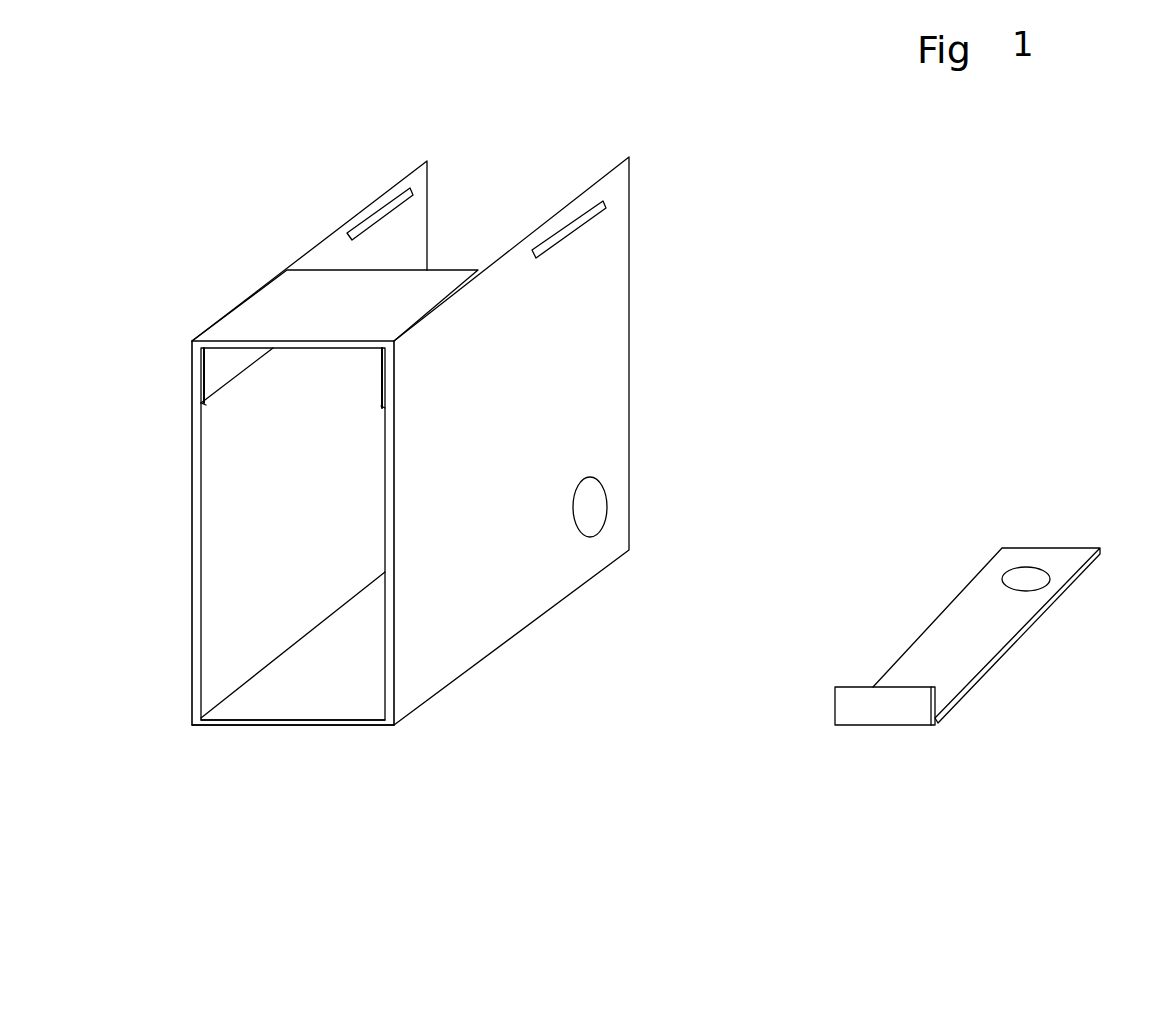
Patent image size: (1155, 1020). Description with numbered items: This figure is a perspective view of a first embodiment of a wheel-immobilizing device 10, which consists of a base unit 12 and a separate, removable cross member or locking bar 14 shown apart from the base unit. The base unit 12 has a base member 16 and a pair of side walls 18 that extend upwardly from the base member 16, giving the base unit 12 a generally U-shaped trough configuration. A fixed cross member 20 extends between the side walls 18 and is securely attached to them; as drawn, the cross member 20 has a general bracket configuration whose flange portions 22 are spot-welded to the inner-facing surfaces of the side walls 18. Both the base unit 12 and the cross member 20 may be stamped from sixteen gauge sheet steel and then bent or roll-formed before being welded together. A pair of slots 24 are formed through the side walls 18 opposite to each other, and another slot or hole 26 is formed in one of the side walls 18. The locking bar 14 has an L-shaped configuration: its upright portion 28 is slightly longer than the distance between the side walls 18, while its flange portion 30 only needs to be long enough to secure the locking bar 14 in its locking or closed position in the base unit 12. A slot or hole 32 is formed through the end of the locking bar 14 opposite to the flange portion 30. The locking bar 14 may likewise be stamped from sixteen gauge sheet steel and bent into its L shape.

The wheel-immobilizing device 10 is at (163, 817).
The base unit 12 is at (132, 221).
The locking bar 14 is at (989, 500).
The base member 16 is at (297, 707).
The side walls 18 is at (417, 247).
The fixed cross member 20 is at (342, 332).
The flange portions 22 is at (220, 378).
The slots 24 is at (385, 210).
The slot or hole 26 is at (598, 512).
The upright portion 28 is at (990, 643).
The flange portion 30 is at (883, 713).
The slot or hole 32 is at (1025, 577).